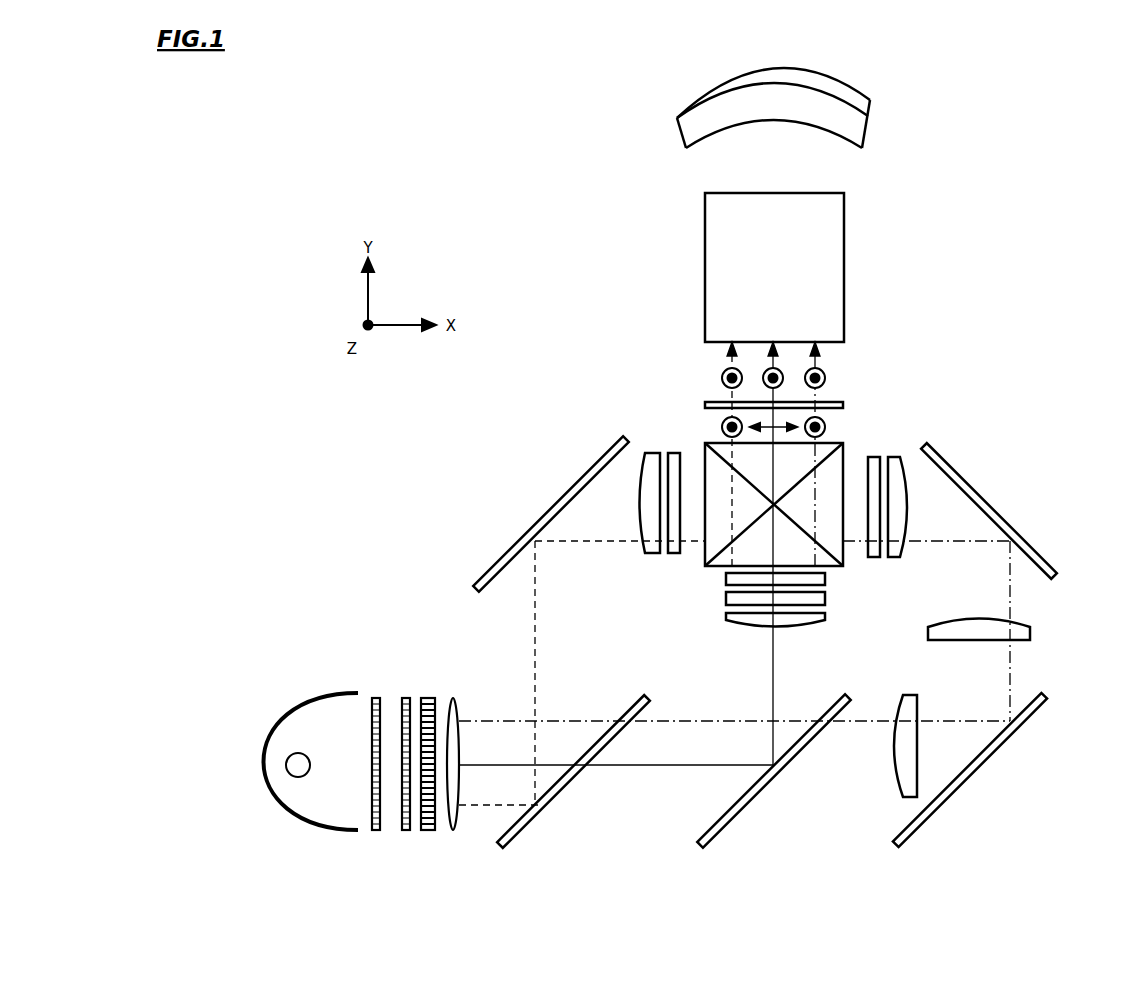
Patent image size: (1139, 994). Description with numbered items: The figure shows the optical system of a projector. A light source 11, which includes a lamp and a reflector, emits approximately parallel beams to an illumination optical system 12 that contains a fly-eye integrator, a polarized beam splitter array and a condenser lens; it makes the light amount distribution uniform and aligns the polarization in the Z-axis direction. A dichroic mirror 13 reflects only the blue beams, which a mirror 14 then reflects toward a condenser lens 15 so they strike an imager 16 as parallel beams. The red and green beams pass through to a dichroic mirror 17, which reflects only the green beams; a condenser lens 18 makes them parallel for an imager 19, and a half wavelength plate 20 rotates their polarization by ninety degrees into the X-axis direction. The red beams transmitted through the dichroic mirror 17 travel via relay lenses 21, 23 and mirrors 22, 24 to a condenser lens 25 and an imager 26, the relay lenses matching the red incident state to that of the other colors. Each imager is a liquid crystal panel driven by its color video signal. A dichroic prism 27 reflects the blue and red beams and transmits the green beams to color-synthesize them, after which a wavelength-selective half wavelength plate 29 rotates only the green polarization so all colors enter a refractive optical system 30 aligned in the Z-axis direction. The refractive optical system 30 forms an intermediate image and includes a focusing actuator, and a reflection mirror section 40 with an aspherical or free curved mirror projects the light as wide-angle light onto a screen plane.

The light source 11 is at (298, 700).
The illumination optical system 12 is at (459, 686).
The dichroic mirror 13 is at (557, 795).
The mirror 14 is at (490, 563).
The condenser lens 15 is at (648, 554).
The imager 16 is at (675, 452).
The dichroic mirror 17 is at (752, 795).
The condenser lens 18 is at (735, 632).
The imager 19 is at (726, 598).
The half wavelength plate 20 is at (726, 579).
The relay lens 21 is at (895, 700).
The mirror 22 is at (950, 795).
The relay lens 23 is at (1020, 640).
The mirror 24 is at (982, 492).
The condenser lens 25 is at (900, 556).
The imager 26 is at (871, 456).
The dichroic prism 27 is at (836, 566).
The wavelength-selective half wavelength plate 29 is at (838, 396).
The refractive optical system 30 is at (835, 268).
The reflection mirror section 40 is at (866, 100).